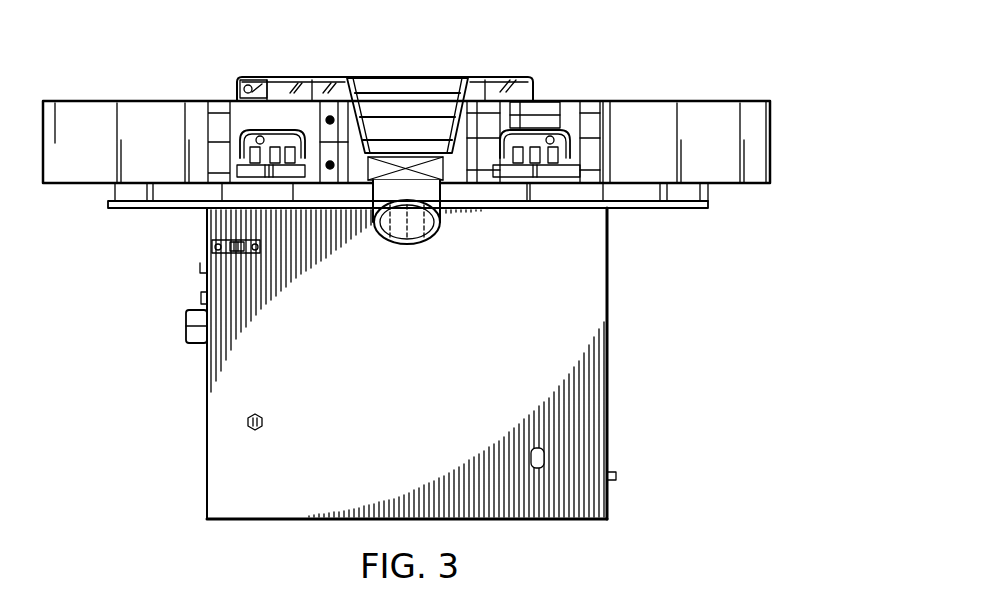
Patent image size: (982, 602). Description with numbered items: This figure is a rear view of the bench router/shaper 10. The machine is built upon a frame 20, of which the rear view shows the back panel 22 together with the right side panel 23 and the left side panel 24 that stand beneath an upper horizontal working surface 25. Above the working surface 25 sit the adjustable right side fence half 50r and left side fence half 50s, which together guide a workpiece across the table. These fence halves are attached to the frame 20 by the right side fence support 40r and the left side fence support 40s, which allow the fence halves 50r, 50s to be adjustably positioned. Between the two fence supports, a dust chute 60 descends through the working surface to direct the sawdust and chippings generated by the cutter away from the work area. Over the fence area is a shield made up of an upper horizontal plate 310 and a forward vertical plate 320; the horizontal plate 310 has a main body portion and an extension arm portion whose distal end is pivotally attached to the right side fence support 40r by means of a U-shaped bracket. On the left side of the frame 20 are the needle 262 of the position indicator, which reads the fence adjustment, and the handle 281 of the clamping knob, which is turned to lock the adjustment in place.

The router/shaper 10 is at (765, 60).
The frame 20 is at (595, 243).
The back panel 22 is at (547, 368).
The right side panel 23 is at (207, 450).
The left side panel 24 is at (607, 306).
The upper horizontal working surface 25 is at (108, 198).
The right side fence half 50r is at (88, 147).
The left side fence half 50s is at (710, 135).
The right side fence support 40r is at (257, 125).
The left side fence support 40s is at (548, 112).
The dust chute 60 is at (418, 103).
The upper horizontal plate 310 is at (327, 85).
The forward vertical plate 320 is at (515, 78).
The needle 262 is at (201, 297).
The handle 281 is at (186, 333).